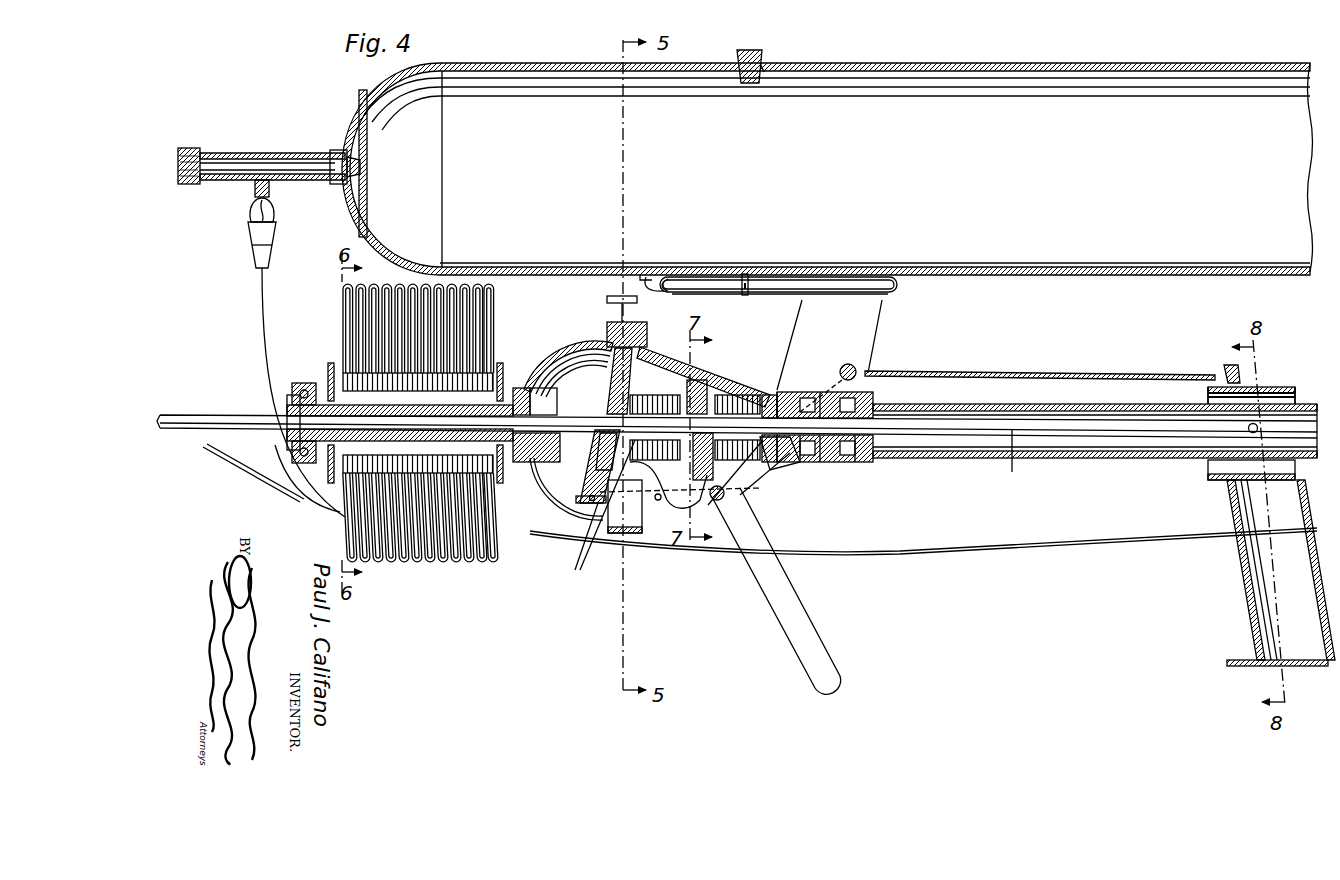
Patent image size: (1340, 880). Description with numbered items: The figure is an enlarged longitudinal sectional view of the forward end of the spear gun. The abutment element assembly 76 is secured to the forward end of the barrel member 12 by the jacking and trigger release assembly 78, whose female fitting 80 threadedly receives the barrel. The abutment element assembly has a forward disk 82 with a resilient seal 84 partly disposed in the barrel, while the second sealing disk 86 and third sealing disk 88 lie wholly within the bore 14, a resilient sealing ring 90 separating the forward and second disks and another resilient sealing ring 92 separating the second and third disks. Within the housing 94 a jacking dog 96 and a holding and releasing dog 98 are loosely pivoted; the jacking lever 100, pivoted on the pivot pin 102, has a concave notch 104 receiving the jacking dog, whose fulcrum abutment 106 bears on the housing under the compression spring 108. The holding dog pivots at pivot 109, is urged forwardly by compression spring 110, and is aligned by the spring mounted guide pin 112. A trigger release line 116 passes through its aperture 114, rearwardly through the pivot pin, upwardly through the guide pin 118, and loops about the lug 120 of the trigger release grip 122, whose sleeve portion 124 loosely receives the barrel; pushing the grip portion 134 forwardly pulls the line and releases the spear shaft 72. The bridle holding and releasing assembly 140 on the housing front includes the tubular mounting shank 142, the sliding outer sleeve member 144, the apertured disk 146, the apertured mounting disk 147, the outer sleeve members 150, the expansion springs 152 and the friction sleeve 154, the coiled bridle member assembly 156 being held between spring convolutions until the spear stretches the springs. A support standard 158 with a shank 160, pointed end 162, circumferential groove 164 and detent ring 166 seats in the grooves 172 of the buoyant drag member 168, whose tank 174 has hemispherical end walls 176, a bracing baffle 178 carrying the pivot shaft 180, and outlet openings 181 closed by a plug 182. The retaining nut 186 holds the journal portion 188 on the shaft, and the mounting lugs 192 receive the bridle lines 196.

The barrel member 12 is at (1086, 462).
The bore 14 is at (1135, 444).
The spear shaft 72 is at (1000, 460).
The abutment element assembly 76 is at (884, 416).
The jacking and trigger release assembly 78 is at (735, 366).
The female fitting 80 is at (765, 393).
The forward disk 82 is at (781, 465).
The resilient seal 84 is at (800, 392).
The second sealing disk 86 is at (820, 463).
The third sealing disk 88 is at (882, 458).
The resilient sealing ring 90 is at (800, 463).
The resilient sealing ring 92 is at (852, 463).
The housing 94 is at (660, 343).
The jacking dog 96 is at (710, 394).
The holding and releasing dog 98 is at (634, 393).
The jacking lever 100 is at (780, 593).
The pivot pin 102 is at (757, 492).
The concave notch 104 is at (692, 488).
The fulcrum abutment 106 is at (682, 394).
The compression spring 108 is at (733, 395).
The pivot 109 is at (613, 370).
The compression spring 110 is at (609, 452).
The spring mounted guide pin 112 is at (606, 299).
The aperture 114 is at (596, 500).
The trigger release line 116 is at (640, 508).
The guide pin 118 is at (848, 364).
The lug 120 is at (1224, 372).
The trigger release grip 122 is at (1236, 563).
The sleeve portion 124 is at (1279, 386).
The grip portion 134 is at (1250, 618).
The bridle holding and releasing assembly 140 is at (318, 381).
The tubular mounting shank 142 is at (533, 356).
The outer sleeve member 144 is at (496, 485).
The apertured disk 146 is at (531, 380).
The apertured mounting disk 147 is at (300, 478).
The outer sleeve members 150 is at (338, 358).
The expansion springs 152 is at (499, 366).
The friction sleeve 154 is at (300, 397).
The bridle member assembly 156 is at (226, 476).
The support standard 158 is at (890, 300).
The shank 160 is at (770, 282).
The pointed end 162 is at (670, 276).
The circumferential groove 164 is at (743, 275).
The detent ring 166 is at (744, 294).
The buoyant drag member 168 is at (974, 62).
The circumferential grooves 172 is at (746, 281).
The tank 174 is at (1088, 63).
The hemispherical end walls 176 is at (373, 93).
The bracing baffle 178 is at (368, 200).
The pivot shaft 180 is at (286, 163).
The outlet openings 181 is at (764, 75).
The plug 182 is at (740, 52).
The retaining nut 186 is at (190, 149).
The journal portion 188 is at (230, 153).
The apertured mounting lugs 192 is at (255, 190).
The bridle lines 196 is at (263, 312).